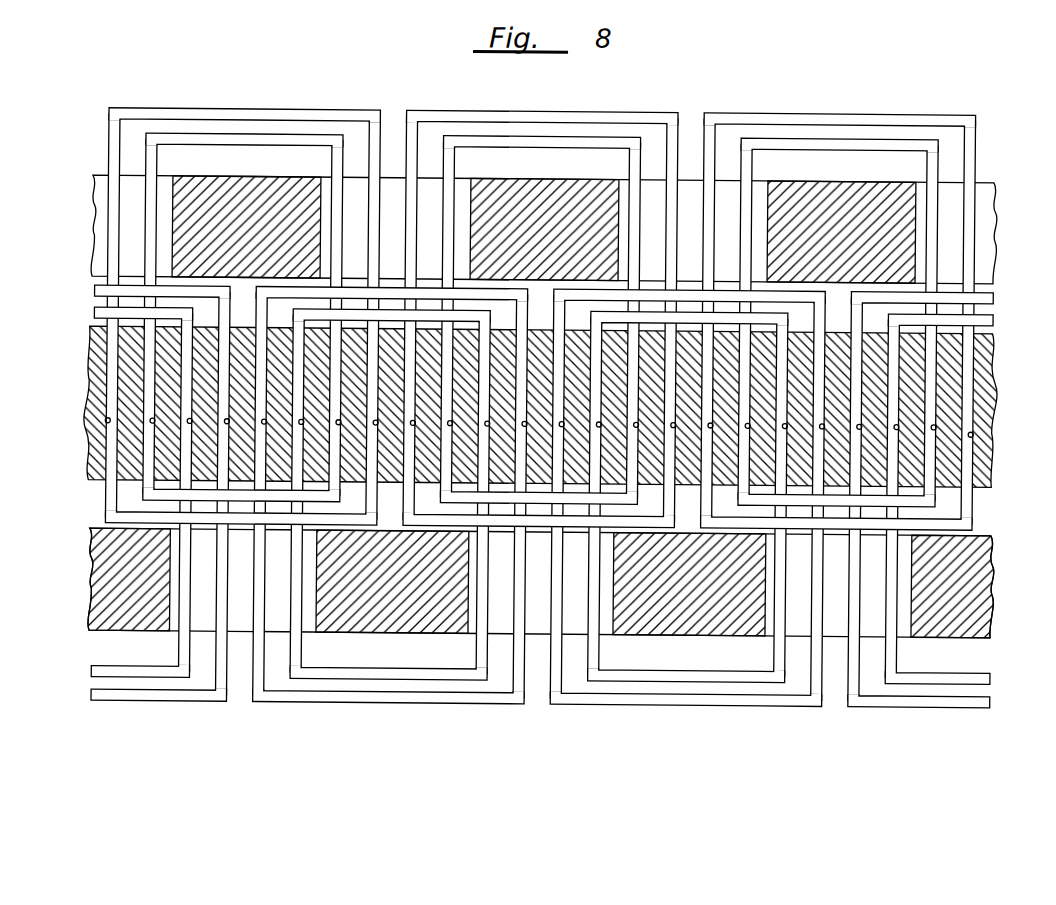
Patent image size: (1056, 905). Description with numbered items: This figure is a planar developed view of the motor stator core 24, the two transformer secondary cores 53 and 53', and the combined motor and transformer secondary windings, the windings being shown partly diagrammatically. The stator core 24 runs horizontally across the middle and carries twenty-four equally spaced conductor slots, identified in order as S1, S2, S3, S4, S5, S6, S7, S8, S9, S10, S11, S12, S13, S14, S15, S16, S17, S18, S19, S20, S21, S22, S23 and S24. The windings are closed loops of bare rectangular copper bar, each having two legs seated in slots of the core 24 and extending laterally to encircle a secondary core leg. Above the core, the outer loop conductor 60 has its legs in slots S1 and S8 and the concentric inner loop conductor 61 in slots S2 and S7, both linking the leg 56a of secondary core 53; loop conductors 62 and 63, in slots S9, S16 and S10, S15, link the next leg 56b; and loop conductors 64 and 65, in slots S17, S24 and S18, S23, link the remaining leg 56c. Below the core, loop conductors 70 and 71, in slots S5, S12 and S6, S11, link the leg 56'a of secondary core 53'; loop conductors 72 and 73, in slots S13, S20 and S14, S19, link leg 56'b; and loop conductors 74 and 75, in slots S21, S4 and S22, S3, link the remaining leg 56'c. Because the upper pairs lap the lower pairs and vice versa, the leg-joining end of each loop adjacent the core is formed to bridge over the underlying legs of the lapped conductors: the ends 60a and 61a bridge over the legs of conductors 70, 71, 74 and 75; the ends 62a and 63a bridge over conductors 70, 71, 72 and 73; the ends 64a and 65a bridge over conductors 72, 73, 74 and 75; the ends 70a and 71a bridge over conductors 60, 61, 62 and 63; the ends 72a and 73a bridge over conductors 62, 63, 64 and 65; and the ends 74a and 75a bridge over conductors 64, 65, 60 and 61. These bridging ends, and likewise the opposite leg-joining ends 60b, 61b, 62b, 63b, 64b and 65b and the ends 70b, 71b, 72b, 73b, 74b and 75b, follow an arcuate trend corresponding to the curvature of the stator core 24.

The motor stator core 24 is at (88, 443).
The secondary core 53 is at (513, 229).
The secondary core element 53' is at (515, 583).
The secondary core leg 56a is at (278, 187).
The secondary core leg 56b is at (551, 187).
The secondary core leg 56c is at (861, 186).
The secondary core leg 56'a is at (392, 598).
The secondary core leg 56'b is at (689, 600).
The secondary core leg 56'c is at (544, 599).
The closed loop conductor 60 is at (106, 137).
The bridging end of loop conductor 60 60a is at (134, 520).
The opposite leg-joining end of loop conductor 60 60b is at (222, 116).
The closed loop conductor 61 is at (143, 169).
The bridging end of loop conductor 61 61a is at (165, 495).
The opposite leg-joining end of loop conductor 61 61b is at (252, 139).
The closed loop conductor 62 is at (404, 124).
The bridging end of loop conductor 62 62a is at (507, 521).
The opposite leg-joining end of loop conductor 62 62b is at (503, 116).
The closed loop conductor 63 is at (441, 147).
The bridging end of loop conductor 63 63a is at (542, 498).
The opposite leg-joining end of loop conductor 63 63b is at (541, 141).
The closed loop conductor 64 is at (700, 128).
The bridging end of loop conductor 64 64a is at (800, 519).
The opposite leg-joining end of loop conductor 64 64b is at (802, 117).
The closed loop conductor 65 is at (739, 148).
The bridging end of loop conductor 65 65a is at (842, 497).
The opposite leg-joining end of loop conductor 65 65b is at (847, 141).
The closed loop conductor 70 is at (256, 685).
The bridging end of loop conductor 70 70a is at (348, 289).
The opposite leg-joining end of loop conductor 70 70b is at (420, 703).
The closed loop conductor 71 is at (291, 680).
The bridging end of loop conductor 71 71a is at (384, 311).
The opposite leg-joining end of loop conductor 71 71b is at (463, 681).
The closed loop conductor 72 is at (553, 684).
The bridging end of loop conductor 72 72a is at (656, 269).
The opposite leg-joining end of loop conductor 72 72b is at (709, 704).
The closed loop conductor 73 is at (587, 677).
The bridging end of loop conductor 73 73a is at (682, 311).
The opposite leg-joining end of loop conductor 73 73b is at (751, 681).
The closed loop conductor 74 is at (219, 706).
The bridging end of loop conductor 74 74a is at (93, 293).
The opposite leg-joining end of loop conductor 74 74b is at (92, 699).
The closed loop conductor 75 is at (189, 683).
The bridging end of loop conductor 75 75a is at (93, 316).
The opposite leg-joining end of loop conductor 75 75b is at (92, 676).
The conductor slot S1 is at (106, 422).
The conductor slot S2 is at (154, 422).
The conductor slot S3 is at (192, 422).
The conductor slot S4 is at (229, 422).
The conductor slot S5 is at (266, 422).
The conductor slot S6 is at (303, 422).
The conductor slot S7 is at (340, 422).
The conductor slot S8 is at (378, 422).
The conductor slot S9 is at (415, 422).
The conductor slot S10 is at (452, 422).
The conductor slot S11 is at (489, 422).
The conductor slot S12 is at (526, 422).
The conductor slot S13 is at (564, 422).
The conductor slot S14 is at (601, 422).
The conductor slot S15 is at (638, 422).
The conductor slot S16 is at (675, 422).
The conductor slot S17 is at (712, 422).
The conductor slot S18 is at (750, 422).
The conductor slot S19 is at (787, 422).
The conductor slot S20 is at (824, 422).
The conductor slot S21 is at (861, 422).
The conductor slot S22 is at (898, 422).
The conductor slot S23 is at (936, 422).
The conductor slot S24 is at (974, 429).